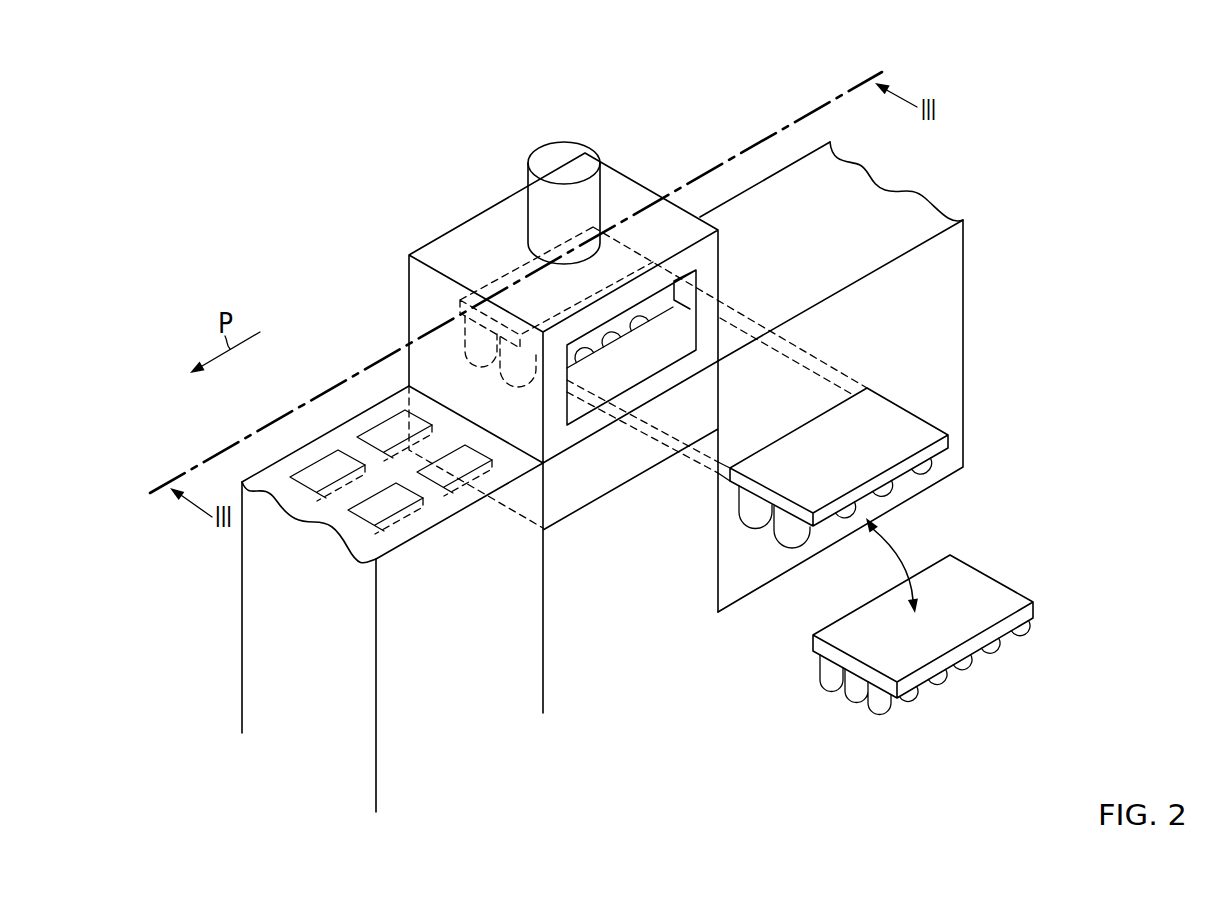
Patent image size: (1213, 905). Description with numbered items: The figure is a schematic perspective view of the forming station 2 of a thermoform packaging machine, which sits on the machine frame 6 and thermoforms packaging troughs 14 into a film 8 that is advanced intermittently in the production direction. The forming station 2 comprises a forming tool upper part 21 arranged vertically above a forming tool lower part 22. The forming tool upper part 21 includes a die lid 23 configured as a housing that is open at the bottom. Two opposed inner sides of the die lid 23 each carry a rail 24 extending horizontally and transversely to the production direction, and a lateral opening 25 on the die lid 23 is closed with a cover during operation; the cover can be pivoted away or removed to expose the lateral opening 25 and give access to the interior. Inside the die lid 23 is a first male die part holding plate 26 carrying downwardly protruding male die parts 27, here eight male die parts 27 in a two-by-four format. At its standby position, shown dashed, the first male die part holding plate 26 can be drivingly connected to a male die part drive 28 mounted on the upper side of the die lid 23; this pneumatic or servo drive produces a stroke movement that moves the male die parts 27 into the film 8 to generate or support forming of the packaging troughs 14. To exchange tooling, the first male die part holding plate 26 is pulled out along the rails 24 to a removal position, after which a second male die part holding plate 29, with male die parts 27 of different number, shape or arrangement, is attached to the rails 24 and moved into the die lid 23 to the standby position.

The forming station 2 is at (423, 192).
The machine frame 6 is at (392, 599).
The film 8 is at (907, 213).
The packaging troughs 14 is at (423, 497).
The forming tool upper part 21 is at (420, 287).
The forming tool lower part 22 is at (573, 498).
The die lid 23 is at (420, 322).
The rail 24 is at (569, 372).
The lateral opening 25 is at (618, 386).
The first male die part holding plate 26 is at (515, 272).
The male die part 27 is at (781, 538).
The male die part drive 28 is at (582, 153).
The second male die part holding plate 29 is at (987, 588).